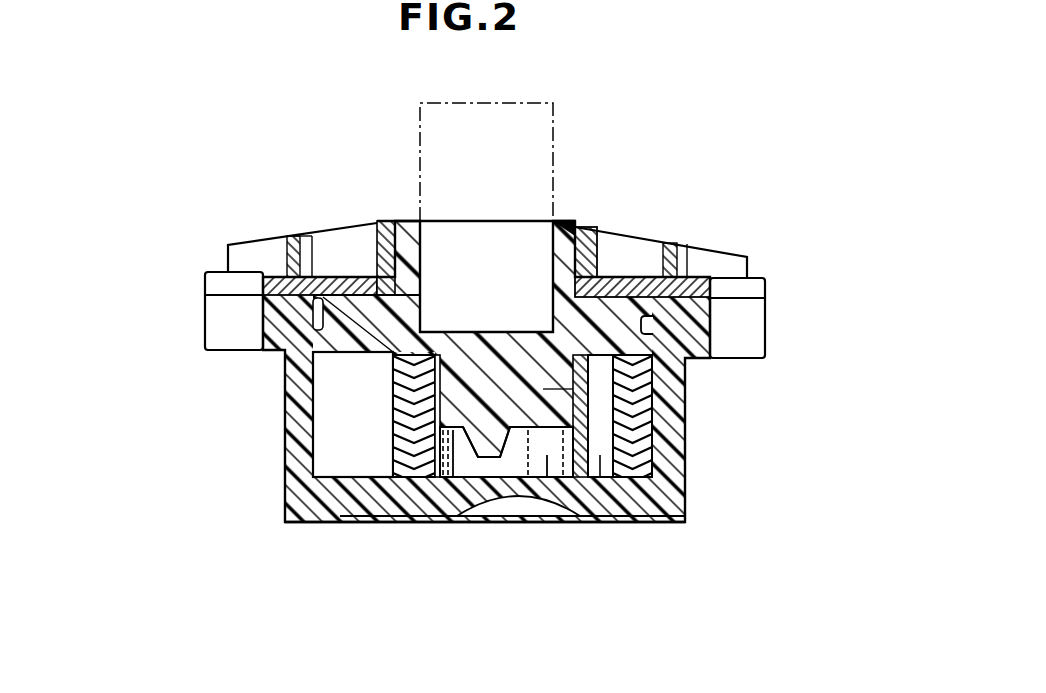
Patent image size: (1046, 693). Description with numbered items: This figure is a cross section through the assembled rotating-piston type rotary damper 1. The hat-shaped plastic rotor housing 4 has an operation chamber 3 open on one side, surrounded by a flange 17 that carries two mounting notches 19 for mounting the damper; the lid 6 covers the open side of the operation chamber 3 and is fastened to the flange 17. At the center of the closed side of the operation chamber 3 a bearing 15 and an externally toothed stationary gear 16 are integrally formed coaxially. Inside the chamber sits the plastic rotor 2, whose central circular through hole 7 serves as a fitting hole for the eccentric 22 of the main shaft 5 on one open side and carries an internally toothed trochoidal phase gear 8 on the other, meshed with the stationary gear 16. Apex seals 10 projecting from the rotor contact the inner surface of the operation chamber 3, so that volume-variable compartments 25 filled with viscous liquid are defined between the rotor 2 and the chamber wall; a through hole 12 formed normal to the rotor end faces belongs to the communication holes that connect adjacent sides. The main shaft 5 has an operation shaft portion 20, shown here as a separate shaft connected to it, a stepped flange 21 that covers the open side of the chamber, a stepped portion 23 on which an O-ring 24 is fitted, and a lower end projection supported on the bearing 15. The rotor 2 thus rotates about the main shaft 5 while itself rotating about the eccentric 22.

The rotary damper 1 is at (268, 200).
The rotor 2 is at (395, 424).
The operation chamber 3 is at (340, 421).
The rotor housing 4 is at (285, 522).
The main shaft 5 is at (568, 228).
The lid 6 is at (638, 248).
The circular through hole 7 is at (547, 478).
The trochoidal phase gear 8 is at (577, 516).
The apex seals 10 is at (655, 458).
The through hole 12 is at (630, 522).
The bearing 15 is at (455, 478).
The stationary gear 16 is at (442, 478).
The flange 17 is at (266, 314).
The mounting notches 19 is at (758, 332).
The operation shaft portion 20 is at (432, 160).
The stepped flange 21 is at (368, 338).
The eccentric 22 is at (620, 406).
The stepped portion 23 is at (648, 368).
The O-ring 24 is at (660, 322).
The volume-variable compartments 25 is at (286, 430).